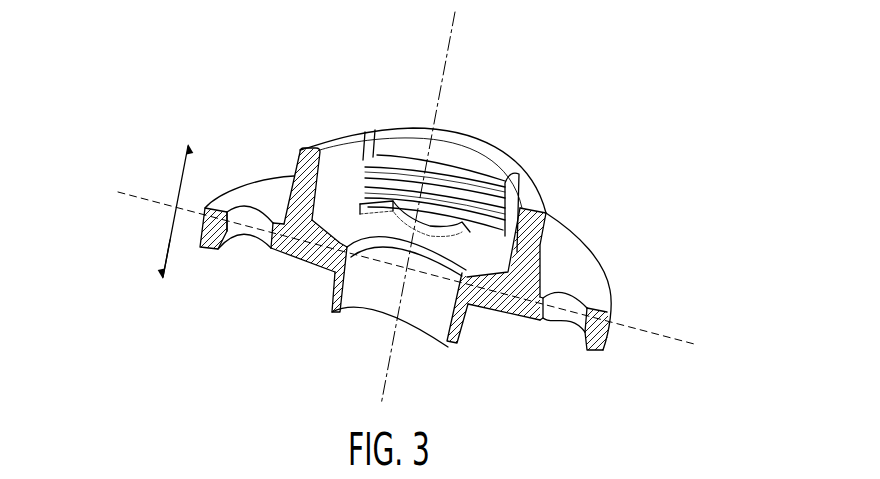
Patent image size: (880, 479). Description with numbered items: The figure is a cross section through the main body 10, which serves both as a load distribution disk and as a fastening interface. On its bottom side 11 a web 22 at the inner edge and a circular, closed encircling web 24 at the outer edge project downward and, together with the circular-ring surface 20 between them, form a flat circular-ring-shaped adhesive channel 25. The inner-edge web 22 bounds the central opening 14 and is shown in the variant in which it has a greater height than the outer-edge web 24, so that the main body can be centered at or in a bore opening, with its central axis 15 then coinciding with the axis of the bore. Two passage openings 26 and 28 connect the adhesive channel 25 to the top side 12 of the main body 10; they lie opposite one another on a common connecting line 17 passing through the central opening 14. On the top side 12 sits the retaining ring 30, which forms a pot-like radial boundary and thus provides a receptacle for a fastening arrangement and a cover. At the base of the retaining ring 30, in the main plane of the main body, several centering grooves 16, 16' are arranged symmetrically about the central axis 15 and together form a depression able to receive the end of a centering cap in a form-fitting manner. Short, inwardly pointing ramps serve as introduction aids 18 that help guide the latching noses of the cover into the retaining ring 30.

The main body 10 is at (160, 133).
The bottom side 11 is at (150, 261).
The top side 12 is at (192, 207).
The central opening 14 is at (359, 332).
The central axis 15 is at (450, 47).
The centering groove 16 is at (418, 138).
The centering groove 16' is at (497, 196).
The connecting line 17 is at (420, 278).
The introduction aid 18 is at (484, 167).
The circular-ring surface 20 is at (272, 272).
The web 22 is at (465, 353).
The encircling web 24 is at (621, 366).
The adhesive channel 25 is at (503, 322).
The passage opening 26 is at (564, 302).
The passage opening 28 is at (240, 217).
The retaining ring 30 is at (534, 236).